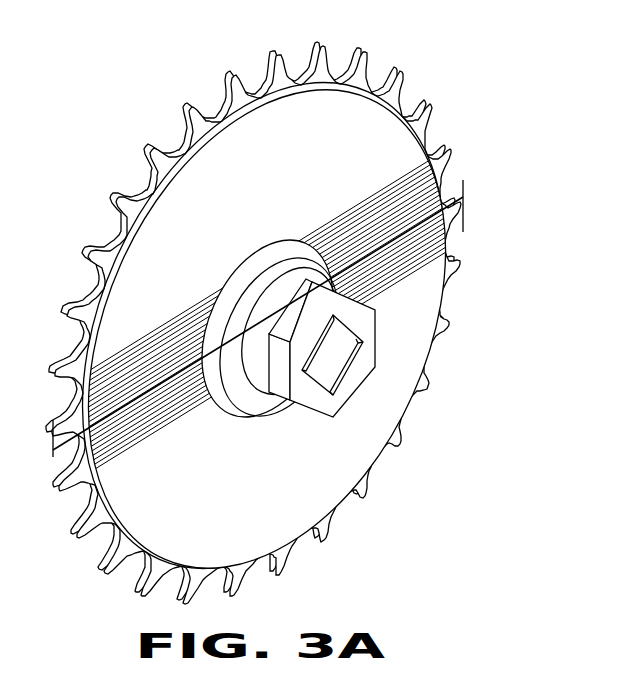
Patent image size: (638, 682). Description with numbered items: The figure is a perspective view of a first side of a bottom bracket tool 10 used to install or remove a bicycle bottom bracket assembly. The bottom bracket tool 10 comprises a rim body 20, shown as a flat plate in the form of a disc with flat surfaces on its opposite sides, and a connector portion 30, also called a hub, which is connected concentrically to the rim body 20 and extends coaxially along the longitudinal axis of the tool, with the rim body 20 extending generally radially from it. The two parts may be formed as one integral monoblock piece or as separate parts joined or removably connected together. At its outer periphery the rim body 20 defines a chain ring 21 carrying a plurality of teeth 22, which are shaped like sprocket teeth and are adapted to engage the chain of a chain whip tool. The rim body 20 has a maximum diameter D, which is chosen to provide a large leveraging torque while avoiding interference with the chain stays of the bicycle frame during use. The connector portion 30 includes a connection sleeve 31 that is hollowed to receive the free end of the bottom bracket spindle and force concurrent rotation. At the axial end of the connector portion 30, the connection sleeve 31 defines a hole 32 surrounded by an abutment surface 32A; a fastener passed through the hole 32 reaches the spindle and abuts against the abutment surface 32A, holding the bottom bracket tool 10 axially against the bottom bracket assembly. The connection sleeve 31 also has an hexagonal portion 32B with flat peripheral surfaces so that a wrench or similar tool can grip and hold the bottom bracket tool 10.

The bottom bracket tool 10 is at (310, 320).
The rim body 20 is at (378, 413).
The chain ring 21 is at (560, 29).
The teeth 22 is at (320, 307).
The connector portion 30 is at (291, 418).
The connection sleeve 31 is at (257, 383).
The hole 32 is at (338, 357).
The abutment surface 32A is at (360, 318).
The hexagonal portion 32B is at (278, 388).
The maximum diameter D is at (56, 458).